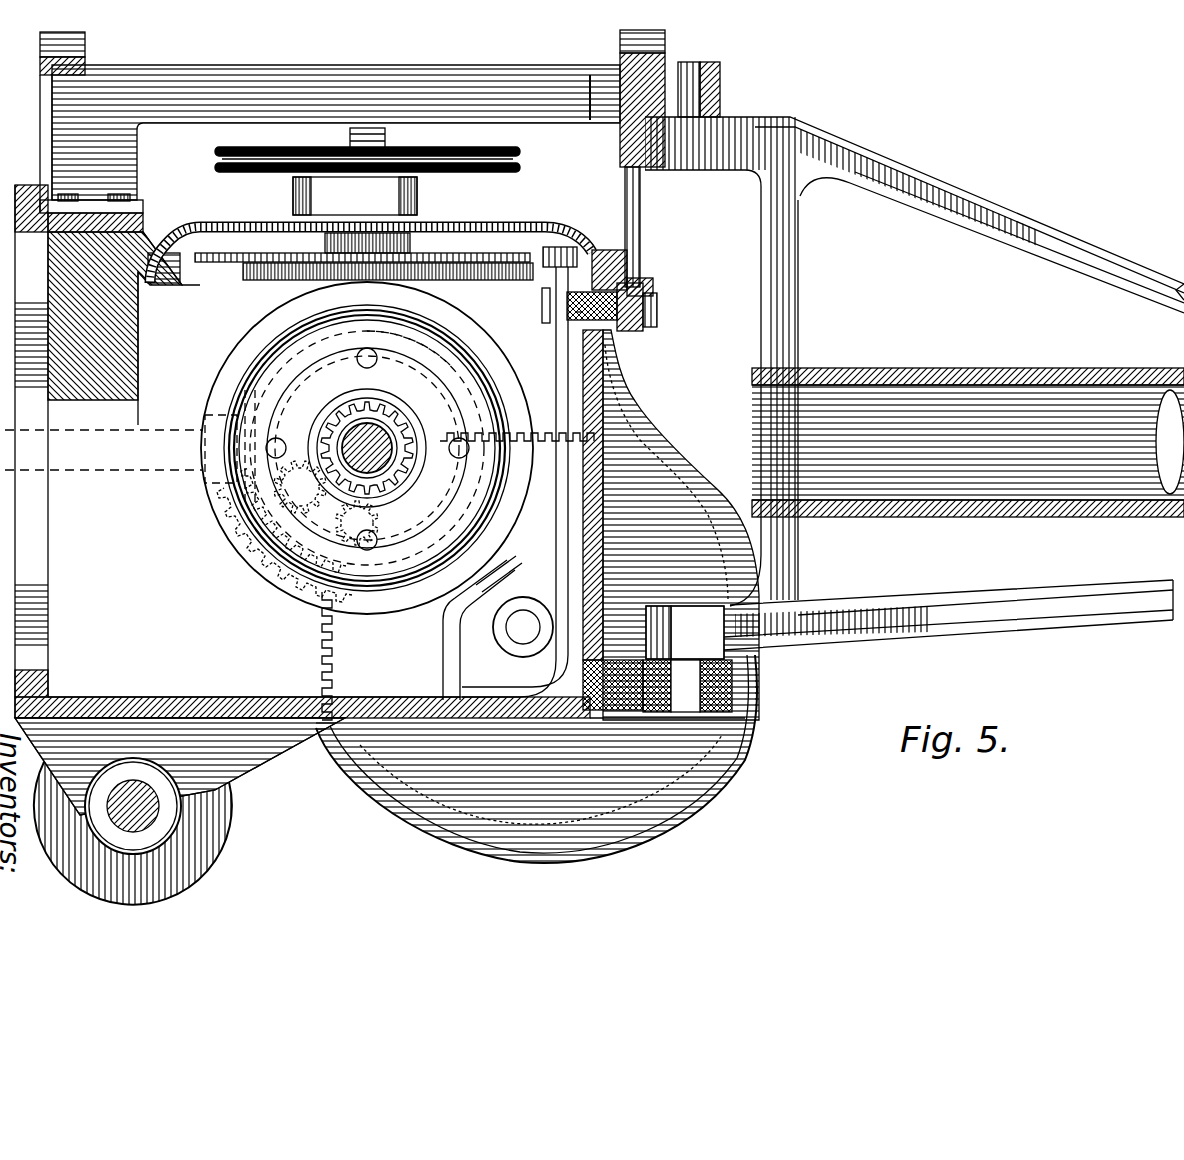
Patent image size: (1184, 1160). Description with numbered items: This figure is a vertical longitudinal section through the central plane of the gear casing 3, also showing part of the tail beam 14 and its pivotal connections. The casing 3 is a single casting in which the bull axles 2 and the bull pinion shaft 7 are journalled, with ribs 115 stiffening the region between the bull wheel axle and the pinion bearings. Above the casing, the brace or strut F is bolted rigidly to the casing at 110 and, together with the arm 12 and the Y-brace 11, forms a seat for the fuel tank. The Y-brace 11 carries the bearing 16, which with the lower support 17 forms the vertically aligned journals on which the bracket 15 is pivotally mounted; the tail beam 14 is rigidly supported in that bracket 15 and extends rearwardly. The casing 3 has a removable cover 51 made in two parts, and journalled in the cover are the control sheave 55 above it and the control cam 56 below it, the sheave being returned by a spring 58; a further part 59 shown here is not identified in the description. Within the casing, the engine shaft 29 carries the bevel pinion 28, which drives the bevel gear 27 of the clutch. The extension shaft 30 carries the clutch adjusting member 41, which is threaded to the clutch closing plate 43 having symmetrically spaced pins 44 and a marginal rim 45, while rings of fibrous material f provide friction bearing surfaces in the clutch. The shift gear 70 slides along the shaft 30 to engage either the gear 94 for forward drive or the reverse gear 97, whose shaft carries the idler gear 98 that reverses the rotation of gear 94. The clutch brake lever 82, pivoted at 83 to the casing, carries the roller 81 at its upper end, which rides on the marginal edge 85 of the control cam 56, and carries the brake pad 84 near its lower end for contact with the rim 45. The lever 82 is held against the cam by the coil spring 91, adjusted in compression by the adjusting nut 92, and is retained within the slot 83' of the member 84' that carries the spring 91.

The brace or strut F is at (345, 76).
The arm 12 is at (40, 122).
The bolting point of brace 110 is at (143, 222).
The control sheave 55 is at (462, 158).
The spring 58 is at (355, 196).
The sleeve 59 is at (410, 240).
The removable cover 51 is at (498, 222).
The roller 81 is at (570, 247).
The marginal edge 85 is at (488, 262).
The Y-brace 11 is at (641, 221).
The bearing 16 is at (722, 85).
The bracket 15 is at (998, 212).
The coil spring 91 is at (642, 283).
The adjusting nut 92 is at (657, 313).
The slot 83' is at (524, 305).
The member 84' is at (544, 332).
The clutch brake lever 82 is at (600, 378).
The tail beam 14 is at (968, 442).
The control cam 56 is at (262, 282).
The clutch closing plate 43 is at (367, 438).
The bevel gear 27 is at (285, 365).
The marginal rim 45 is at (245, 352).
The bevel pinion 28 is at (218, 393).
The pins 44 is at (281, 440).
The clutch adjusting member 41 is at (388, 416).
The extension shaft 30 is at (392, 440).
The shaft 29 is at (112, 472).
The gear casing 3 is at (302, 451).
The shift gear 70 is at (394, 492).
The idler gear 98 is at (245, 540).
The reverse gear 97 is at (266, 570).
The gear 94 is at (322, 638).
The brake pad 84 is at (520, 575).
The bull pinion shaft 7 is at (518, 630).
The pivot 83 is at (455, 630).
The ribs 115 is at (250, 756).
The bull axles 2 is at (120, 818).
The lower support 17 is at (750, 695).
The fibrous rings f is at (408, 343).